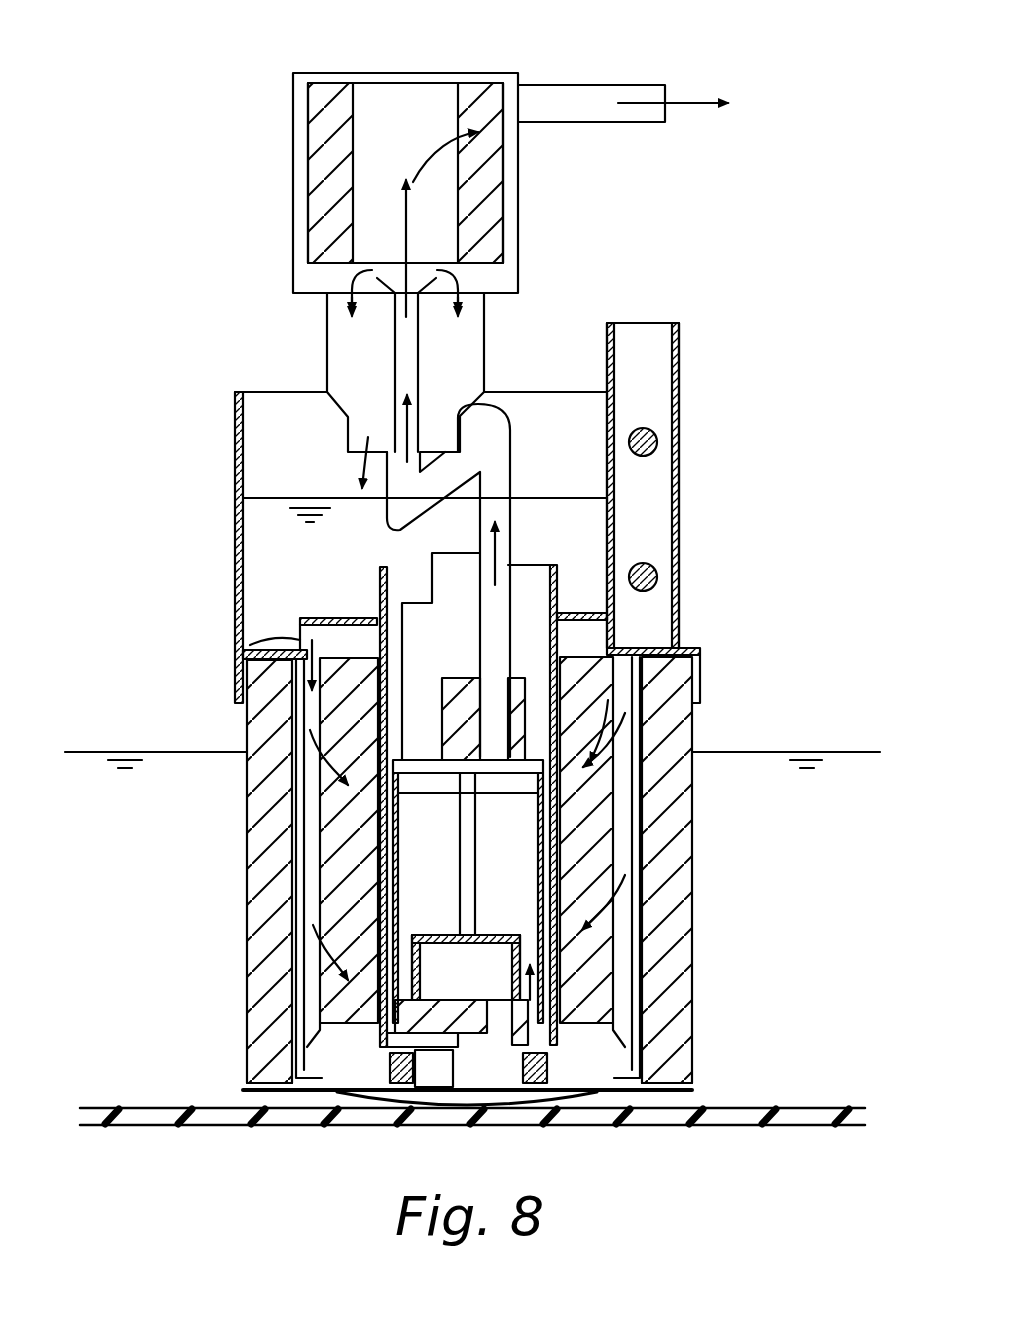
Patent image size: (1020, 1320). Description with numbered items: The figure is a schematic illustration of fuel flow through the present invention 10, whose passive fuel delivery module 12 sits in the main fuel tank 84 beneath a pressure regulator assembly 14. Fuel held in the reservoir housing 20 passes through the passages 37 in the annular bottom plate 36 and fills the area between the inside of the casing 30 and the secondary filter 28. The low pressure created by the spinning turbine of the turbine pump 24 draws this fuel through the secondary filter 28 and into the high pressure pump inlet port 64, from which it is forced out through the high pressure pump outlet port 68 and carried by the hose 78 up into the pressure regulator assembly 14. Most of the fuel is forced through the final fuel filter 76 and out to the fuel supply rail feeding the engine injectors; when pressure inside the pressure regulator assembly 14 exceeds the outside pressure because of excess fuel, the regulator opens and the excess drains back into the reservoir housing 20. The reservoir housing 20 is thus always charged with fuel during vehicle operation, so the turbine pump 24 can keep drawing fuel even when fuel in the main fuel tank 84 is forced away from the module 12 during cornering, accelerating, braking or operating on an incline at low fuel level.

The present invention 10 is at (243, 163).
The final fuel filter 76 is at (490, 88).
The pressure regulator assembly 14 is at (315, 335).
The hose 78 is at (493, 412).
The reservoir housing 20 is at (356, 550).
The passive fuel delivery module 12 is at (778, 632).
The passages 37 is at (247, 643).
The annular bottom plate 36 is at (304, 620).
The casing 30 is at (300, 823).
The secondary filter 28 is at (340, 875).
The high pressure pump outlet port 68 is at (500, 600).
The turbine pump 24 is at (527, 835).
The high pressure pump inlet port 64 is at (527, 1035).
The main fuel tank 84 is at (187, 1108).